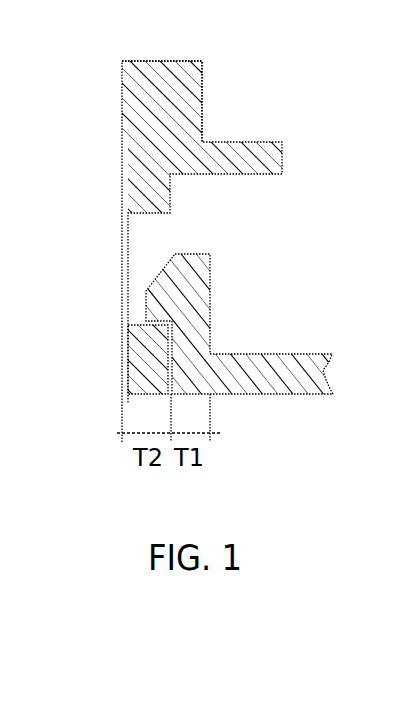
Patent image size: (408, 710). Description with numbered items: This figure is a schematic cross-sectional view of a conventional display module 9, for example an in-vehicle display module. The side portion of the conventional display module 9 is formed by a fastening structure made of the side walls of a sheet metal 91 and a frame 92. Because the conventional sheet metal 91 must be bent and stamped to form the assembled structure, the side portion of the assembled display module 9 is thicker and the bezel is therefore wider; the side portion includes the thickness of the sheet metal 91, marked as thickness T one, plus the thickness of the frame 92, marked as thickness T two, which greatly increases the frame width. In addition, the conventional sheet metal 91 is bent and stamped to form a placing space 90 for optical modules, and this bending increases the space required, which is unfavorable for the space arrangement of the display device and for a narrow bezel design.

The conventional display module 9 is at (122, 60).
The placing space 90 is at (254, 354).
The sheet metal 91 is at (165, 390).
The frame 92 is at (137, 120).